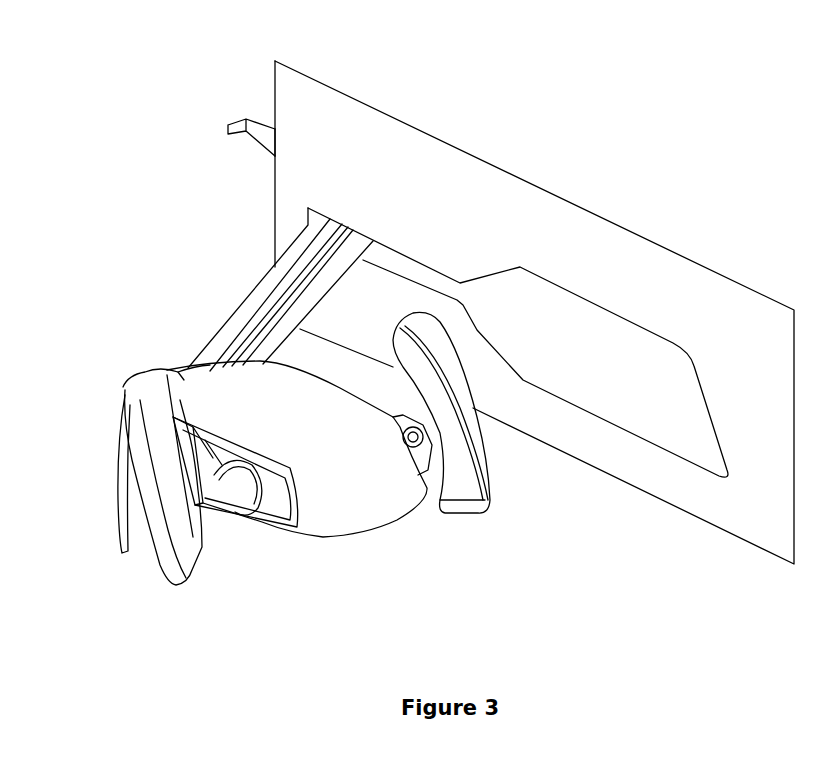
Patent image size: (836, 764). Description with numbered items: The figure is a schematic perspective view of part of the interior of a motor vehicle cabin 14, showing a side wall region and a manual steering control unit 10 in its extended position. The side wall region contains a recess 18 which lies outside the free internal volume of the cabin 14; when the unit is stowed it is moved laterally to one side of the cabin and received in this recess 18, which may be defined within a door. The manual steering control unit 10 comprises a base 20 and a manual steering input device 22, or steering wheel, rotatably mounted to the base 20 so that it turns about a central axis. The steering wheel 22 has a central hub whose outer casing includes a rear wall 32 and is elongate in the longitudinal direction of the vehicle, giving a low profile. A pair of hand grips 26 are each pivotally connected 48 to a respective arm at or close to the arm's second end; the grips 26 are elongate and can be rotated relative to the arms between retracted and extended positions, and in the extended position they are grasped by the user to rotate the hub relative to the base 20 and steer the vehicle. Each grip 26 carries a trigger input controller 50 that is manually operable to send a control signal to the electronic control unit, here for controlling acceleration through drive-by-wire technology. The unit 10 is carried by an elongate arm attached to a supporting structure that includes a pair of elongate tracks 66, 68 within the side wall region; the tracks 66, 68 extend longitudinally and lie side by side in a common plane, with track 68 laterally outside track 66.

The manual steering control unit 10 is at (322, 487).
The cabin 14 is at (327, 130).
The recess 18 is at (567, 292).
The base 20 is at (164, 373).
The manual steering input device 22 is at (398, 517).
The hand grips 26 is at (165, 548).
The rear wall 32 is at (365, 497).
The pivotal connection 48 is at (411, 432).
The trigger input controller 50 is at (119, 511).
The track 66 is at (256, 140).
The track 68 is at (273, 128).